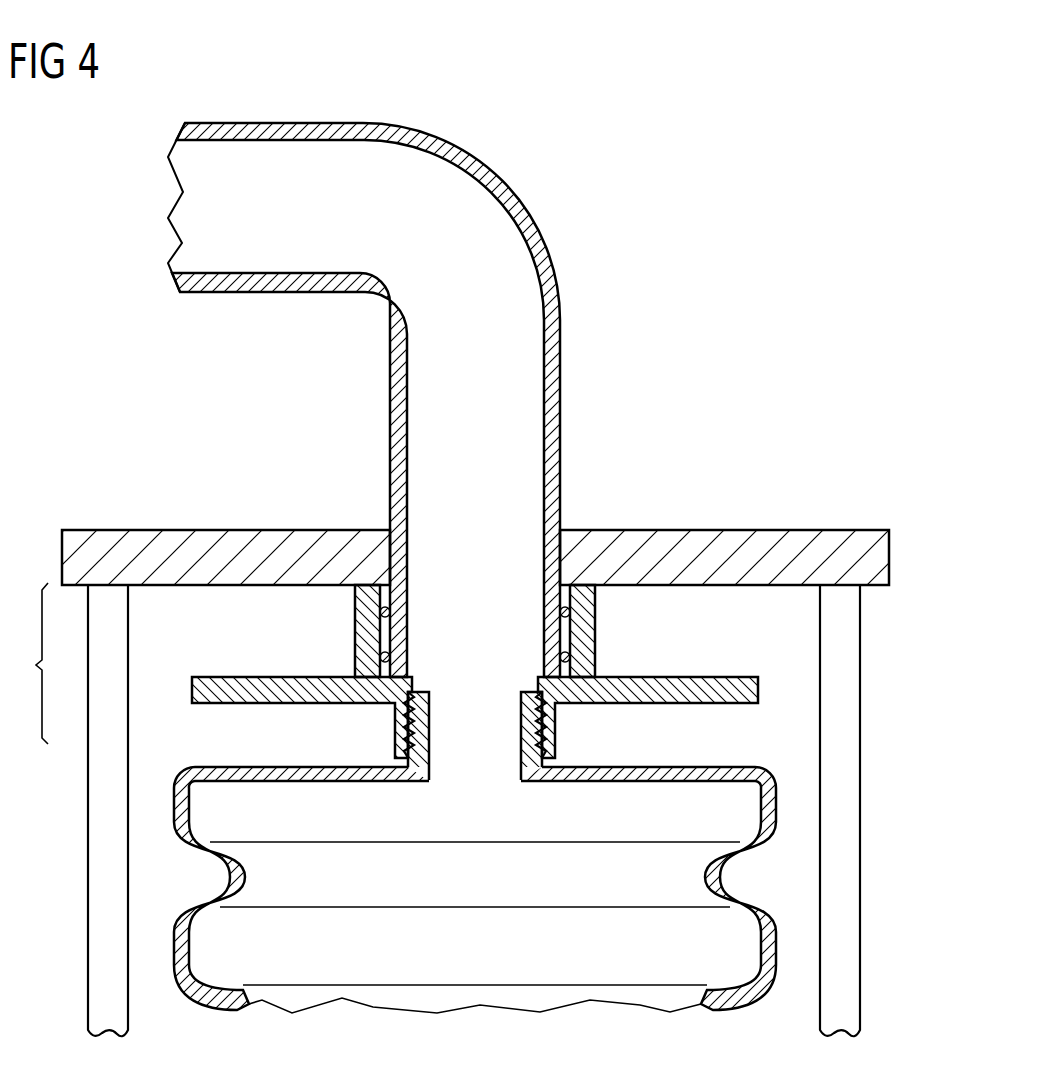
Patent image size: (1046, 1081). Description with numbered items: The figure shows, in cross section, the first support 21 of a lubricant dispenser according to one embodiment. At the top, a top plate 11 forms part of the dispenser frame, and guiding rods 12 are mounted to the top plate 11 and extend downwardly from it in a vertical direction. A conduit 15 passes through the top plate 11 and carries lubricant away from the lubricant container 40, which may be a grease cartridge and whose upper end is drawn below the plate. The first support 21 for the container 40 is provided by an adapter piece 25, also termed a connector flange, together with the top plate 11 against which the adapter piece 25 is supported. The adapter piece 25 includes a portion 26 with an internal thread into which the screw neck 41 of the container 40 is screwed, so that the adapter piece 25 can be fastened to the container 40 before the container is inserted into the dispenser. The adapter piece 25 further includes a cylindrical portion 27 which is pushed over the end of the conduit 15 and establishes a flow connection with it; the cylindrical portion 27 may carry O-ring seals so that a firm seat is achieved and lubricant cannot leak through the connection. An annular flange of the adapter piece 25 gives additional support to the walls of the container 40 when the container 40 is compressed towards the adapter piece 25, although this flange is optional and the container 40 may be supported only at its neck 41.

The top plate 11 is at (744, 550).
The guiding rods 12 is at (848, 740).
The conduit 15 is at (549, 341).
The first support 21 is at (382, 671).
The adapter piece 25 is at (279, 683).
The portion with internal thread 26 is at (402, 730).
The cylindrical portion 27 is at (582, 633).
The lubricant container 40 is at (205, 985).
The screw neck 41 is at (422, 722).